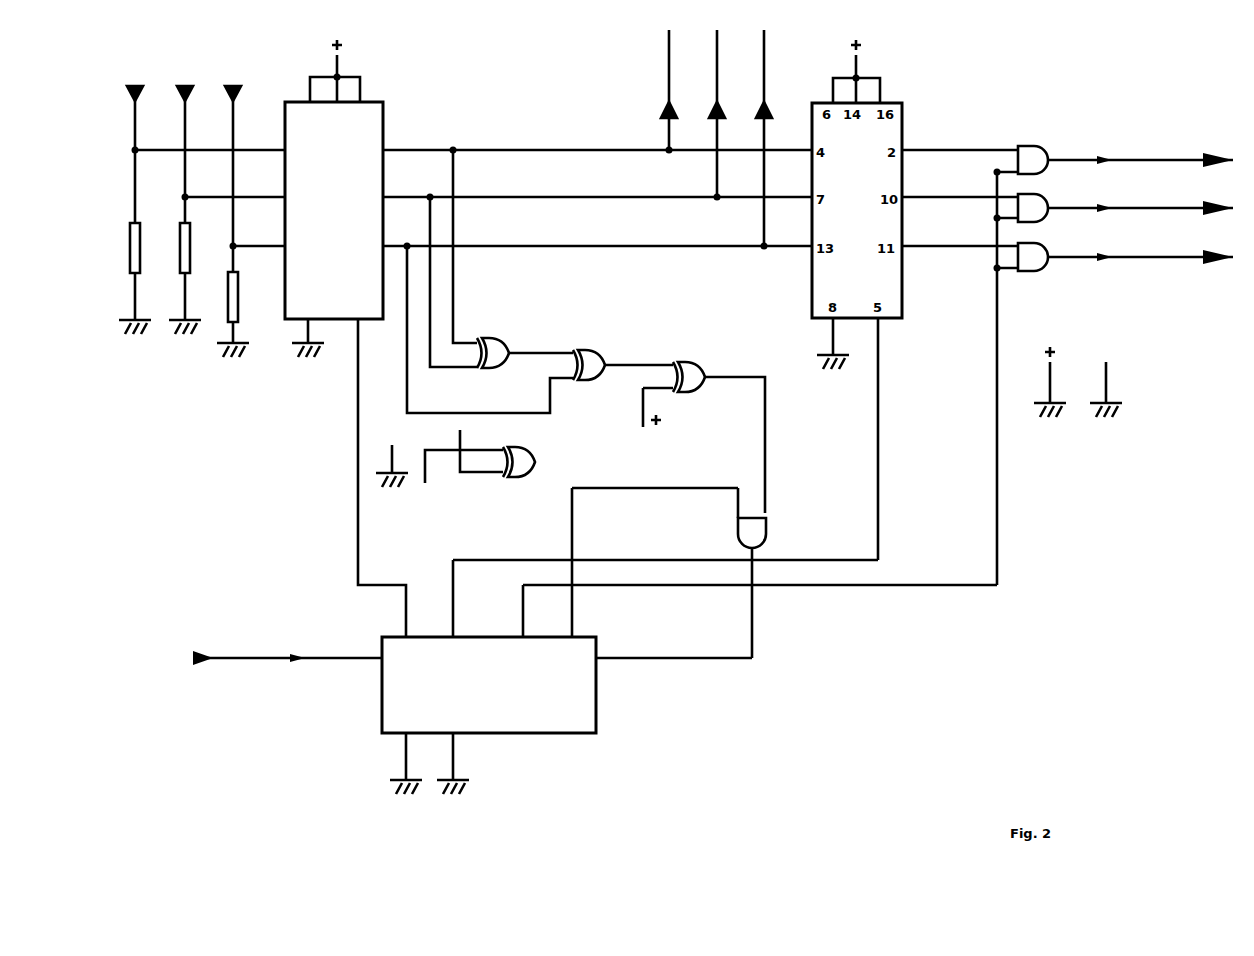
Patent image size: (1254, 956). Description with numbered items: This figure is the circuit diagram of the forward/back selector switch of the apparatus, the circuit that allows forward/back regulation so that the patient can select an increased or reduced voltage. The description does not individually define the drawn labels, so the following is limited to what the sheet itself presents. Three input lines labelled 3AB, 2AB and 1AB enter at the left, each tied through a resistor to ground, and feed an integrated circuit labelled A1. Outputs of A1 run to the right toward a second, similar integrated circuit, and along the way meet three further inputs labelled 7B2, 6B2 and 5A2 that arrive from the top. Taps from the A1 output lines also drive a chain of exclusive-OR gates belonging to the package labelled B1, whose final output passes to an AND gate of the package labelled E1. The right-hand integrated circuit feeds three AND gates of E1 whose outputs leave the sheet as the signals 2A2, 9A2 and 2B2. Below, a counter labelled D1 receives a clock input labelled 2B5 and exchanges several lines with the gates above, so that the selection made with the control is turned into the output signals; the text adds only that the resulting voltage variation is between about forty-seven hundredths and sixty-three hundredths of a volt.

The first integrated circuit A1 is at (334, 198).
The CD4070 XOR gate package B1 is at (570, 331).
The C04017 decade counter D1 is at (677, 556).
The C04081 AND gate package E1 is at (902, 387).
The input signal 3AB is at (147, 210).
The input signal 2AB is at (197, 210).
The input signal 1AB is at (246, 221).
The input signal 7B2 is at (676, 90).
The input signal 6B2 is at (724, 113).
The input signal 5A2 is at (771, 138).
The output signal 2A2 is at (1174, 148).
The output signal 9A2 is at (1174, 197).
The output signal 2B2 is at (1174, 245).
The clock input signal 2B5 is at (287, 654).